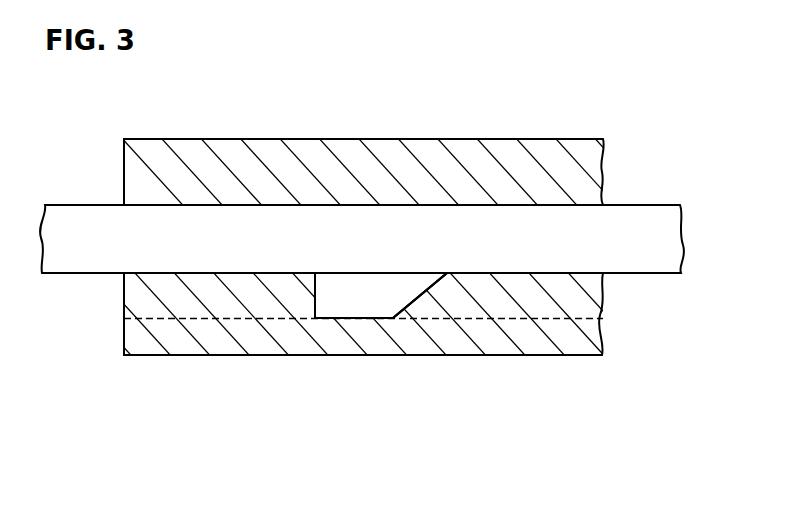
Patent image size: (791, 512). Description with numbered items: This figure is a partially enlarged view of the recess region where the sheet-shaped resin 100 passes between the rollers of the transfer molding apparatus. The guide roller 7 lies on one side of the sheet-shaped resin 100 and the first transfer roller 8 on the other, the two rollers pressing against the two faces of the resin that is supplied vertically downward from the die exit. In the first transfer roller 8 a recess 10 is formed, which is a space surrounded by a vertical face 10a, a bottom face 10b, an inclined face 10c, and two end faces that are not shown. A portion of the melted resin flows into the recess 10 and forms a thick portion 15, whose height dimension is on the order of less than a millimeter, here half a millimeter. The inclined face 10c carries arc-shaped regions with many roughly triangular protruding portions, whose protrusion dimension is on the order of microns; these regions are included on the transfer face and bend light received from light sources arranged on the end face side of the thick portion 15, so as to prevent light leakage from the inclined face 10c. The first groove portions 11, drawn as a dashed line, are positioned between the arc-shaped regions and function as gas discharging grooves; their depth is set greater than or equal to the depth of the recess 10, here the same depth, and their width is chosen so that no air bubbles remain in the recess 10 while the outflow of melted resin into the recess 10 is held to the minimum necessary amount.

The guide roller 7 is at (515, 150).
The first transfer roller 8 is at (523, 347).
The sheet-shaped resin 100 is at (652, 272).
The first groove portions 11 is at (200, 313).
The recess 10 is at (381, 295).
The vertical face 10a is at (315, 290).
The bottom face 10b is at (347, 320).
The inclined face 10c is at (407, 300).
The thick portion 15 is at (378, 293).